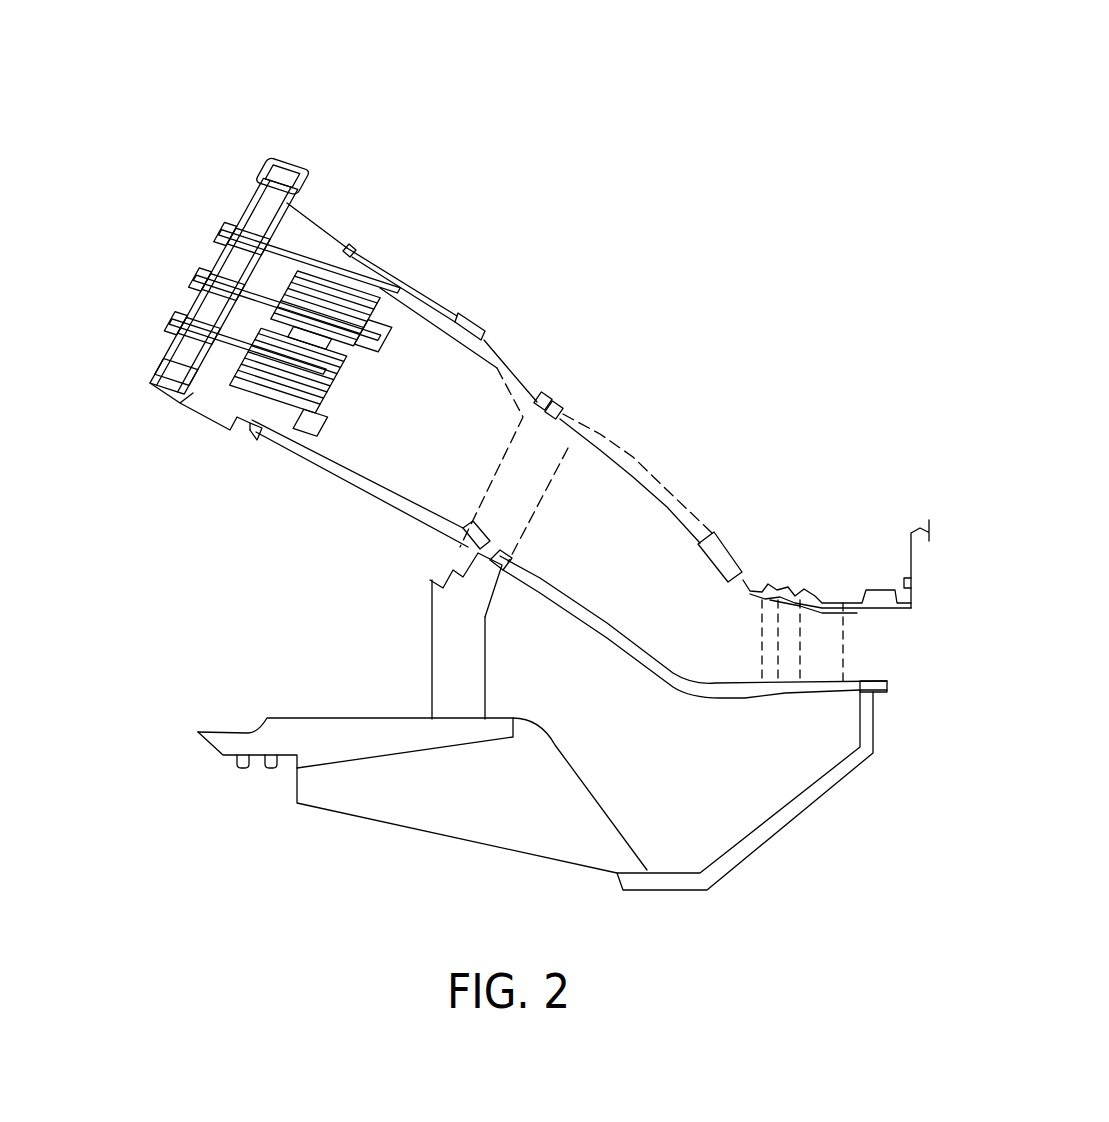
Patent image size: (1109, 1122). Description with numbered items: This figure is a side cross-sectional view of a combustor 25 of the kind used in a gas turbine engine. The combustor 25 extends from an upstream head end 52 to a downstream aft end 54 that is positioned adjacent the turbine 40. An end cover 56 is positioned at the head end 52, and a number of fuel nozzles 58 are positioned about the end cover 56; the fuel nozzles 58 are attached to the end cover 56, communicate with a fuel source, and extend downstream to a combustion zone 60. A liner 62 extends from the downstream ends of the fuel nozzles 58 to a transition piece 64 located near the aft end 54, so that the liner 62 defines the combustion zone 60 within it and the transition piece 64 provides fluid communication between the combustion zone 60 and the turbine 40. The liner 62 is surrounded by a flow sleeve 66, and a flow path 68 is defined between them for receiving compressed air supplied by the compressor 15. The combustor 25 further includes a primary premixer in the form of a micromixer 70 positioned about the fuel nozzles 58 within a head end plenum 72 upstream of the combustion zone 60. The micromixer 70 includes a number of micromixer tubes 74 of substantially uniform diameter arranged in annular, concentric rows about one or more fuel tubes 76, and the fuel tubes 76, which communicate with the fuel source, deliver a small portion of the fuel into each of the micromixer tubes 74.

The compressor 15 is at (245, 733).
The combustor 25 is at (303, 88).
The turbine 40 is at (913, 567).
The head end 52 is at (195, 213).
The aft end 54 is at (827, 557).
The end cover 56 is at (160, 357).
The fuel nozzles 58 is at (212, 400).
The combustion zone 60 is at (438, 424).
The liner 62 is at (497, 350).
The transition piece 64 is at (705, 543).
The flow sleeve 66 is at (665, 482).
The flow path 68 is at (606, 445).
The micromixer 70 is at (346, 269).
The head end plenum 72 is at (249, 418).
The micromixer tubes 74 is at (372, 343).
The fuel tubes 76 is at (280, 258).